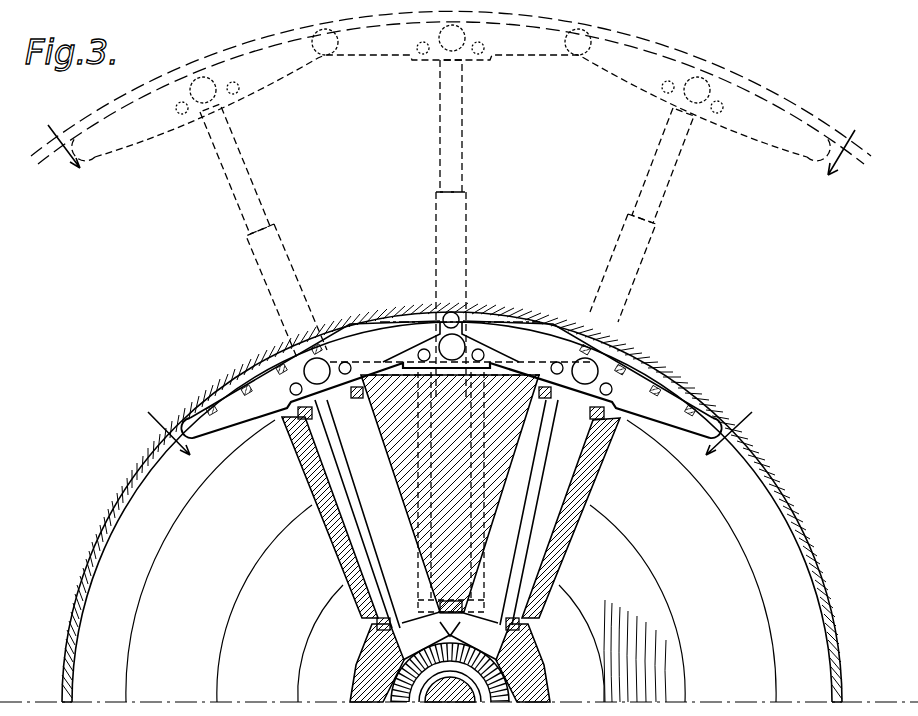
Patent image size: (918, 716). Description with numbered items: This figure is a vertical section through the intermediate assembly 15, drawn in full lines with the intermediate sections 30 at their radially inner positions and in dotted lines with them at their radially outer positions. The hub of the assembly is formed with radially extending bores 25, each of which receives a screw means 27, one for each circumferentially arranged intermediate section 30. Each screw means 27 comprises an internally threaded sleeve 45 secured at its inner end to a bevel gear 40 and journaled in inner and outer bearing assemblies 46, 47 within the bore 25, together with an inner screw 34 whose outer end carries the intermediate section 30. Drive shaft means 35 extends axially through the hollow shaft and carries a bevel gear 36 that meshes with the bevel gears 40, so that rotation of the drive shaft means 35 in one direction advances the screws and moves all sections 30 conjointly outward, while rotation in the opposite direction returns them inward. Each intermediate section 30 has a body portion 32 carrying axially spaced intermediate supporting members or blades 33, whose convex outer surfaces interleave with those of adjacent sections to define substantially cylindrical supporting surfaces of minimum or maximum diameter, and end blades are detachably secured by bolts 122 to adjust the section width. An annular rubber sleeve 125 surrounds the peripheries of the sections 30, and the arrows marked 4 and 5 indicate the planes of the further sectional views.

The intermediate assembly 15 is at (718, 533).
The annular rubber sleeve 125 is at (740, 84).
The radially extending bores 25 is at (350, 520).
The screw means 27 is at (241, 261).
The intermediate section 30 is at (228, 384).
The body portion 32 is at (338, 398).
The intermediate supporting members or blades 33 is at (586, 64).
The inner screw 34 is at (262, 190).
The drive shaft means 35 is at (483, 690).
The bevel gear 36 is at (410, 695).
The bevel gear 40 is at (407, 664).
The internally threaded sleeve 45 is at (385, 577).
The inner bearing assembly 46 is at (383, 627).
The outer bearing assembly 47 is at (294, 420).
The bolts 122 is at (641, 658).
The section line 4 is at (450, 446).
The section line 5 is at (452, 161).